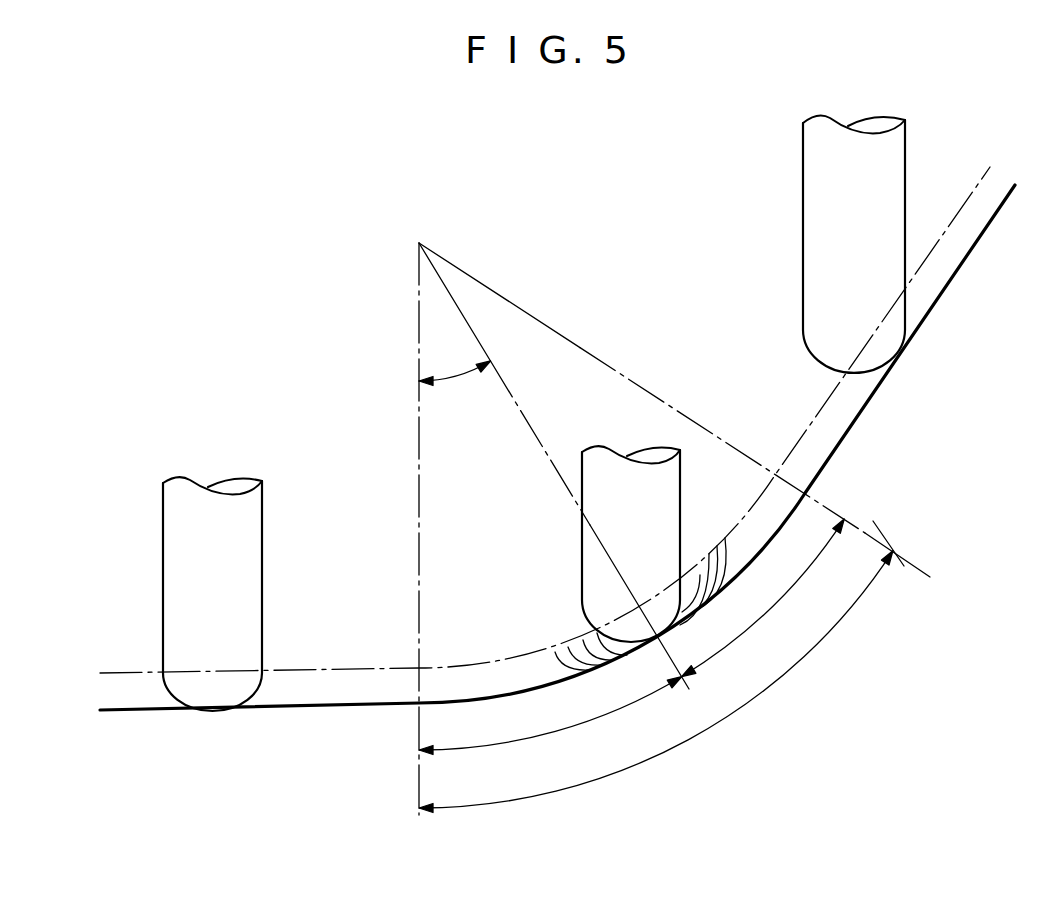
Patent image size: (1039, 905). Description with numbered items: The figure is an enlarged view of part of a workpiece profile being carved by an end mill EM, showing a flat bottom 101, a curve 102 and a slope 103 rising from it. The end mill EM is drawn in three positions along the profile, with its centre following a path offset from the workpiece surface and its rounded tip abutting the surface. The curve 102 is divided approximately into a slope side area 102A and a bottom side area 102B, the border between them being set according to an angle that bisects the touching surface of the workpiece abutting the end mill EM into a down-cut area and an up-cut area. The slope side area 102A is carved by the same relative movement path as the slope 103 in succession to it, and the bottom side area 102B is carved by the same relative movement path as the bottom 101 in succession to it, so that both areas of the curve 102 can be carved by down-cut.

The bottom 101 is at (418, 808).
The curve 102 is at (656, 682).
The slope side area 102A is at (763, 598).
The bottom side area 102B is at (550, 731).
The slope 103 is at (893, 551).
The end mill EM is at (234, 478).